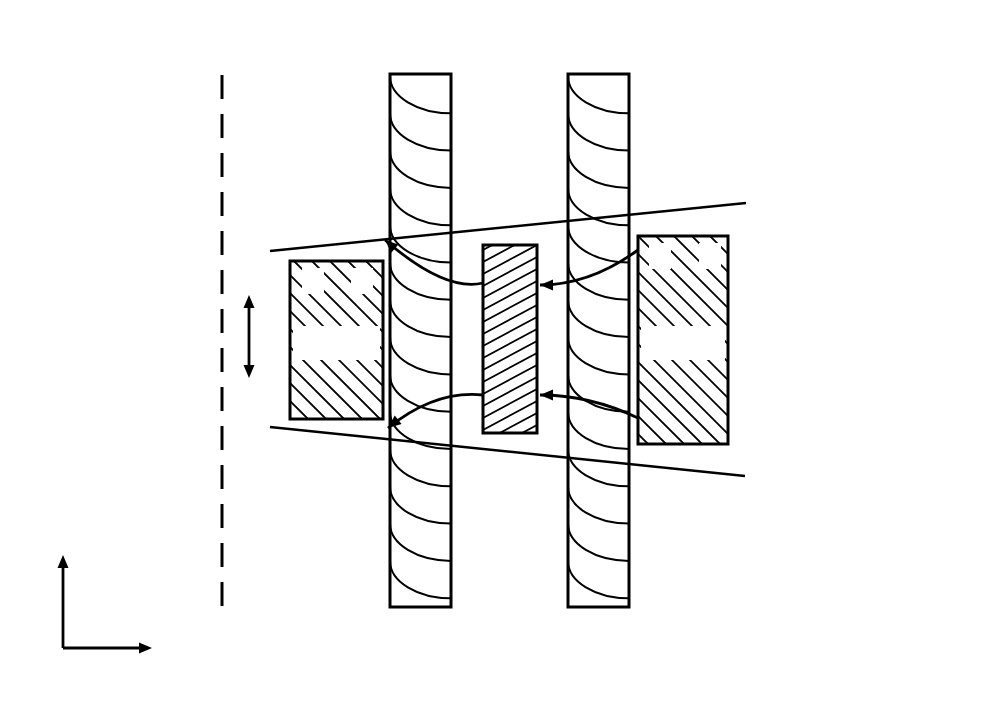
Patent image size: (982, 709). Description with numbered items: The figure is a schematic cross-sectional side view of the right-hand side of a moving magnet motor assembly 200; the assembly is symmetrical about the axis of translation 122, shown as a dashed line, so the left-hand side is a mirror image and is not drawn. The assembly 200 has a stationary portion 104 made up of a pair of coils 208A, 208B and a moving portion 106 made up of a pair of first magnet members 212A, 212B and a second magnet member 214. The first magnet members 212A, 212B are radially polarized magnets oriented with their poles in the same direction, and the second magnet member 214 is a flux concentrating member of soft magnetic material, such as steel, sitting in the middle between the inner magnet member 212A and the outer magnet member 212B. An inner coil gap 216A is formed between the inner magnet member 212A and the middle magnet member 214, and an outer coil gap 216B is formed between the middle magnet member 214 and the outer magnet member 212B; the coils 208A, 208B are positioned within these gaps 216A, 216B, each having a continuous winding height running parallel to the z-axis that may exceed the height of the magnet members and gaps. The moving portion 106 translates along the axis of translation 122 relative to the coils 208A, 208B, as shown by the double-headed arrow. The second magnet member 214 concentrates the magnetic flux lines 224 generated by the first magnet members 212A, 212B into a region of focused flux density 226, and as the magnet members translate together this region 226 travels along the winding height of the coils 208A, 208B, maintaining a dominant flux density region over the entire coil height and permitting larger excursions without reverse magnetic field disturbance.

The assembly 200 is at (807, 60).
The stationary portion 104 is at (647, 95).
The moving portion 106 is at (747, 280).
The axis of translation 122 is at (222, 127).
The coil 208A is at (424, 73).
The coil 208B is at (599, 73).
The first magnet member 212A is at (334, 261).
The first magnet member 212B is at (686, 236).
The second magnet member 214 is at (510, 245).
The coil gap 216A is at (466, 428).
The coil gap 216B is at (551, 430).
The magnetic flux lines 224 is at (470, 283).
The region of focused flux density 226 is at (714, 474).